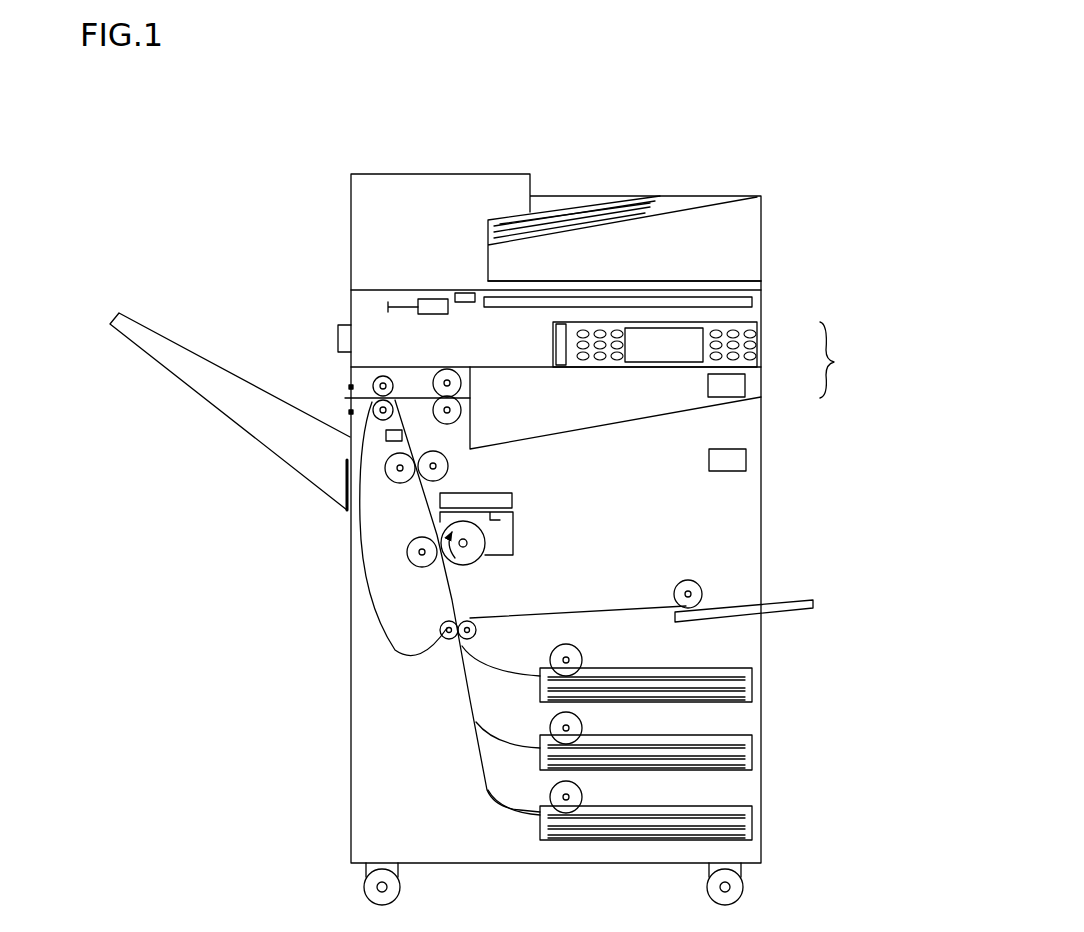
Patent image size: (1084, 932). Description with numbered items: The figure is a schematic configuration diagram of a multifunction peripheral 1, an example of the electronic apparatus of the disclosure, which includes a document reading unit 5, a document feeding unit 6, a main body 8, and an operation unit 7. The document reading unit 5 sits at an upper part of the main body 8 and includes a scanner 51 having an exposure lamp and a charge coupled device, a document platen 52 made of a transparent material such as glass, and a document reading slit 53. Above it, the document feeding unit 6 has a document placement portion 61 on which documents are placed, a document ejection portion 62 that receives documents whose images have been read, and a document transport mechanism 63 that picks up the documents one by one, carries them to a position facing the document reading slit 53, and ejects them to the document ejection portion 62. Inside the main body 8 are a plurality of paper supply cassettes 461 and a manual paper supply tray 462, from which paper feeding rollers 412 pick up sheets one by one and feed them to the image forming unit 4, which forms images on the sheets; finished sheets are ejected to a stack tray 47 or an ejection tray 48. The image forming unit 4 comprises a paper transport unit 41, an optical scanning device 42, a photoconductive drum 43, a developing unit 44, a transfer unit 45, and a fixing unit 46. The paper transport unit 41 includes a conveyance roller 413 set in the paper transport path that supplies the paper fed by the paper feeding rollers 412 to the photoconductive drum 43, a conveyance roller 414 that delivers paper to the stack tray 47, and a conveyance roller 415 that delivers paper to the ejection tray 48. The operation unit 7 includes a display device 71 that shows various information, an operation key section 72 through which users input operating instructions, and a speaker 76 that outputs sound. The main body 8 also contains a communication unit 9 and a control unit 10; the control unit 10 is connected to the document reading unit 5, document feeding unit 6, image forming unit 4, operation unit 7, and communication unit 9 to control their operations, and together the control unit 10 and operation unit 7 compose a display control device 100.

The multifunction peripheral 1 is at (185, 170).
The image forming unit 4 is at (395, 540).
The document reading unit 5 is at (374, 314).
The document feeding unit 6 is at (584, 196).
The operation unit 7 is at (760, 346).
The main body 8 is at (737, 525).
The communication unit 9 is at (747, 460).
The control unit 10 is at (746, 385).
The paper transport unit 41 is at (450, 742).
The optical scanning device 42 is at (513, 499).
The photoconductive drum 43 is at (472, 557).
The developing unit 44 is at (515, 542).
The transfer unit 45 is at (421, 568).
The fixing unit 46 is at (408, 490).
The stack tray 47 is at (240, 442).
The ejection tray 48 is at (612, 425).
The scanner 51 is at (433, 314).
The document platen 52 is at (763, 292).
The document reading slit 53 is at (432, 298).
The document placement portion 61 is at (680, 206).
The document ejection portion 62 is at (700, 281).
The document transport mechanism 63 is at (422, 242).
The display device 71 is at (658, 345).
The operation key section 72 is at (716, 354).
The speaker 76 is at (556, 352).
The display control device 100 is at (848, 360).
The paper feeding rollers 412 is at (694, 582).
The conveyance roller 413 is at (450, 641).
The conveyance roller 414 is at (374, 381).
The conveyance roller 415 is at (463, 383).
The paper supply cassettes 461 is at (752, 825).
The manual paper supply tray 462 is at (790, 616).